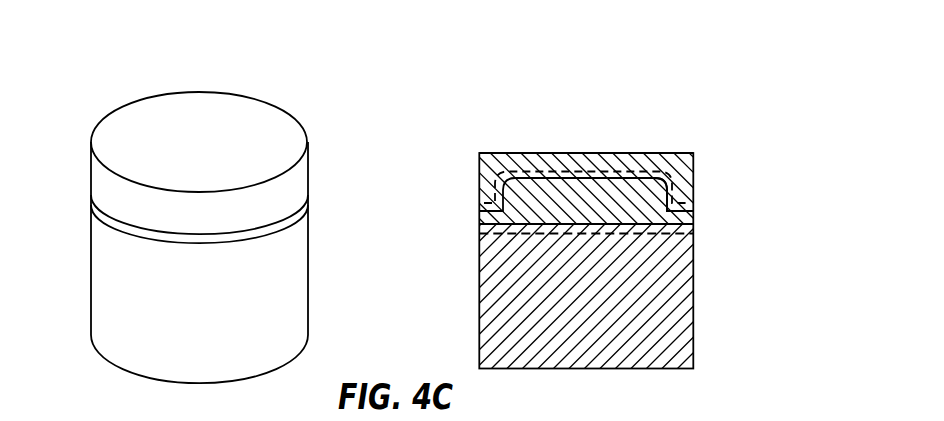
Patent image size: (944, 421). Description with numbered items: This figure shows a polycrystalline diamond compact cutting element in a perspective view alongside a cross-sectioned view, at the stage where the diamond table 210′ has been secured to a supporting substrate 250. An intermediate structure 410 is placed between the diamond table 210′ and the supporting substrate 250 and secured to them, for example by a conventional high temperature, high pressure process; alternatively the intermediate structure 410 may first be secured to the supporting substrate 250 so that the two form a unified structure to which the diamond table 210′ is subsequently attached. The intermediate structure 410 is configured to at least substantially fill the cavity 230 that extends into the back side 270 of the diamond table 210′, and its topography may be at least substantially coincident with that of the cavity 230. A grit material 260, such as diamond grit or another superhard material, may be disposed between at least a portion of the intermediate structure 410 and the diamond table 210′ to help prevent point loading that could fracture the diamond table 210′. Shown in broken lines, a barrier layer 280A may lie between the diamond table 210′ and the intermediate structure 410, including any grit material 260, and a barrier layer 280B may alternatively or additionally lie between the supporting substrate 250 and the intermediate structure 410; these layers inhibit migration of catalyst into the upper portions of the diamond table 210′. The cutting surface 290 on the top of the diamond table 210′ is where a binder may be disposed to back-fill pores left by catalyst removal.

The cutting surface 290 is at (143, 123).
The diamond table 210′ is at (305, 130).
The intermediate structure 410 is at (300, 210).
The supporting substrate 250 is at (308, 280).
The cavity 230 is at (528, 182).
The barrier layer 280A is at (651, 170).
The grit material 260 is at (668, 182).
The back side 270 is at (683, 203).
The barrier layer 280B is at (694, 256).